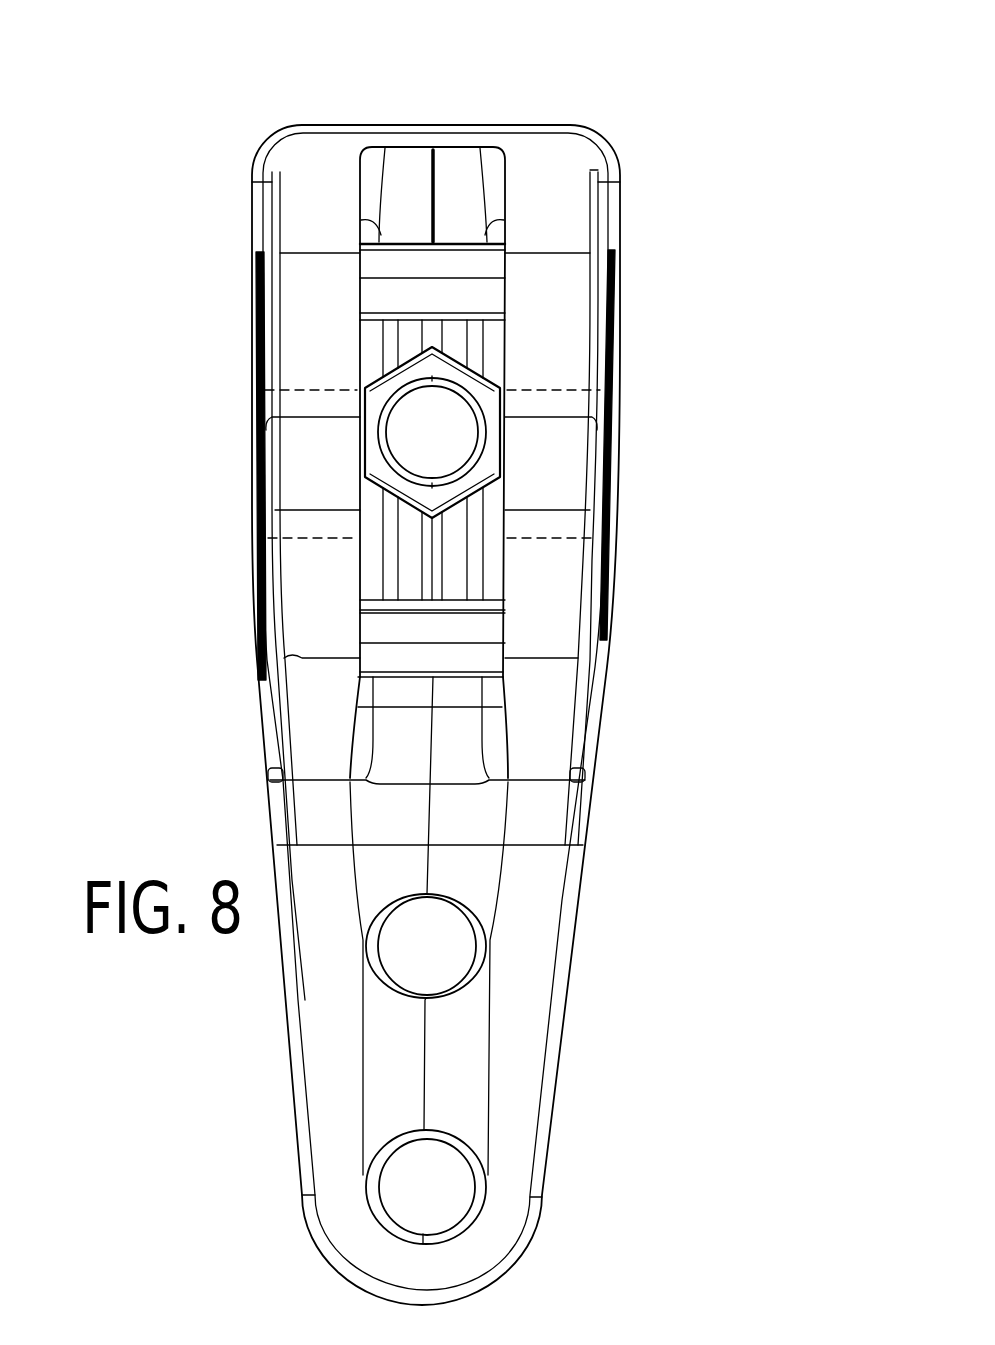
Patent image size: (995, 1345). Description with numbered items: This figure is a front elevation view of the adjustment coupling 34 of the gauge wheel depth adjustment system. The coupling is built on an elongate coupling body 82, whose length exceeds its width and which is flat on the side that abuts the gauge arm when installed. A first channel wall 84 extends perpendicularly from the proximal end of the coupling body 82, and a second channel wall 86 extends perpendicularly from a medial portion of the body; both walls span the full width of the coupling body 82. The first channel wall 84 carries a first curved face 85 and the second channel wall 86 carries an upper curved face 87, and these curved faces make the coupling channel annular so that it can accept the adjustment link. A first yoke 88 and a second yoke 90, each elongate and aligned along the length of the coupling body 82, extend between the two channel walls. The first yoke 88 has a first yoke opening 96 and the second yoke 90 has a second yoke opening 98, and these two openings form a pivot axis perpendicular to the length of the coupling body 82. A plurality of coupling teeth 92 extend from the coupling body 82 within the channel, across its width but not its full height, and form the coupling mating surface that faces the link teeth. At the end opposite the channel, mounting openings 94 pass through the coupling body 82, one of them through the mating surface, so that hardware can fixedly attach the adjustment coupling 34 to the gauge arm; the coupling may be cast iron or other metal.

The adjustment coupling 34 is at (662, 727).
The coupling body 82 is at (558, 185).
The first channel wall 84 is at (404, 173).
The first curved face 85 is at (460, 250).
The second channel wall 86 is at (400, 682).
The upper curved face 87 is at (407, 672).
The first yoke 88 is at (313, 300).
The second yoke 90 is at (553, 303).
The coupling teeth 92 is at (440, 337).
The mounting openings 94 is at (467, 975).
The first yoke opening 96 is at (317, 417).
The second yoke opening 98 is at (543, 420).